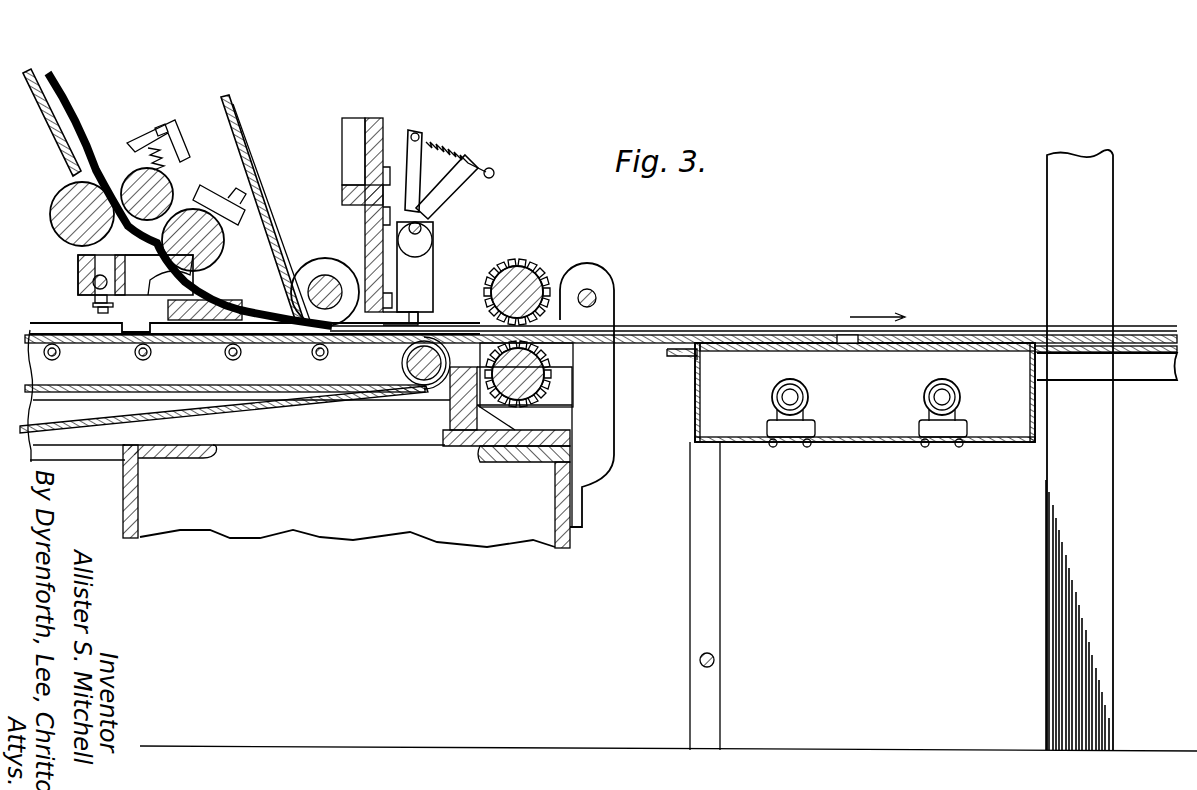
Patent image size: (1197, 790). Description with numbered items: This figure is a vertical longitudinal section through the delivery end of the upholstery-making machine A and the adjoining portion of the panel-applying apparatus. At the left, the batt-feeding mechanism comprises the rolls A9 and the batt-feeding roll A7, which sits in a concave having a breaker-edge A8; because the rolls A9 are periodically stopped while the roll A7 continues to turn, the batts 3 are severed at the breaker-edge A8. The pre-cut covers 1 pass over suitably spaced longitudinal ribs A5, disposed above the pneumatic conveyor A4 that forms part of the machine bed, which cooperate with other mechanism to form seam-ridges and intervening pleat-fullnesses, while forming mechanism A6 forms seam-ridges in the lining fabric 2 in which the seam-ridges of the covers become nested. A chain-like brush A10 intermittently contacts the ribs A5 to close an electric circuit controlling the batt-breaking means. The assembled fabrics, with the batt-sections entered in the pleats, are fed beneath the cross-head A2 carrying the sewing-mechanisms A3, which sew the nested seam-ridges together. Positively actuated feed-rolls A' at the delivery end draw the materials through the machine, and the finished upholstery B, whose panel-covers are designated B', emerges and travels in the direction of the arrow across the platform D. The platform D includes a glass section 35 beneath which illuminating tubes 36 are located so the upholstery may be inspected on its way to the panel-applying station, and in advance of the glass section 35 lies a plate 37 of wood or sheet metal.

The pre-cut covers 1 is at (56, 322).
The lining fabric 2 is at (231, 99).
The batts 3 is at (67, 130).
The upholstery-making machine A is at (298, 164).
The feed-rolls A' is at (549, 380).
The cross-head A2 is at (342, 140).
The sewing-mechanisms A3 is at (427, 255).
The pneumatic conveyor A4 is at (284, 346).
The longitudinal ribs A5 is at (135, 348).
The forming mechanism A6 is at (327, 263).
The batt-feeding roll A7 is at (215, 242).
The breaker-edge A8 is at (78, 268).
The rolls A9 is at (120, 170).
The chain-like brush A10 is at (108, 310).
The upholstery B is at (598, 363).
The panel-covers B' is at (851, 320).
The platform D is at (1041, 346).
The glass section 35 is at (822, 352).
The illuminating tubes 36 is at (771, 397).
The plate 37 is at (1150, 356).